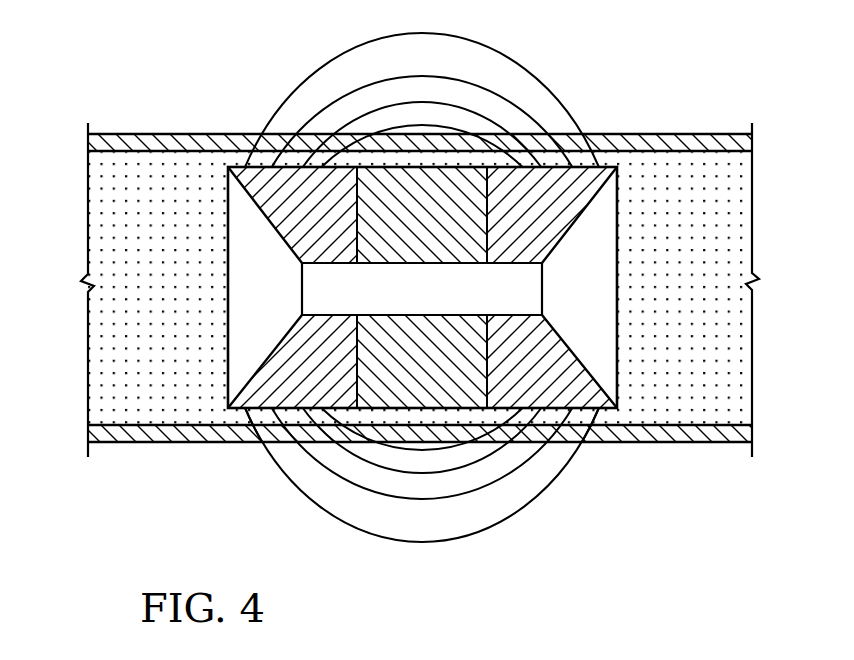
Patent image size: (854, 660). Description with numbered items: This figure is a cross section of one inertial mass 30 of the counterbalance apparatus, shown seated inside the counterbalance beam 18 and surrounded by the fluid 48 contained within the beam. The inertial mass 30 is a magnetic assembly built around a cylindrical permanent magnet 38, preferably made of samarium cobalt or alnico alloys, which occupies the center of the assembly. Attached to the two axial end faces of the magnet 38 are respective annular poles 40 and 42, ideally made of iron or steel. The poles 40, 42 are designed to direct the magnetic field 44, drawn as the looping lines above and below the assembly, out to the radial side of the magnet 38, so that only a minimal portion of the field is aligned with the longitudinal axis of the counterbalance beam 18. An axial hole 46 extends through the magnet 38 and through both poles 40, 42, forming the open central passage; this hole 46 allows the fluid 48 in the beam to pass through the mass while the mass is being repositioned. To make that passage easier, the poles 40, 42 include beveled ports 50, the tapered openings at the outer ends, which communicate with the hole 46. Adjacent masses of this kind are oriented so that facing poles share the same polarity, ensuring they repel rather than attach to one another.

The counterbalance beam 18 is at (684, 134).
The inertial mass 30 is at (409, 312).
The cylindrical permanent magnet 38 is at (364, 407).
The annular pole 40 is at (263, 443).
The annular pole 42 is at (580, 443).
The magnetic field 44 is at (521, 516).
The axial hole 46 is at (412, 315).
The fluid 48 is at (702, 357).
The beveled ports 50 is at (270, 358).